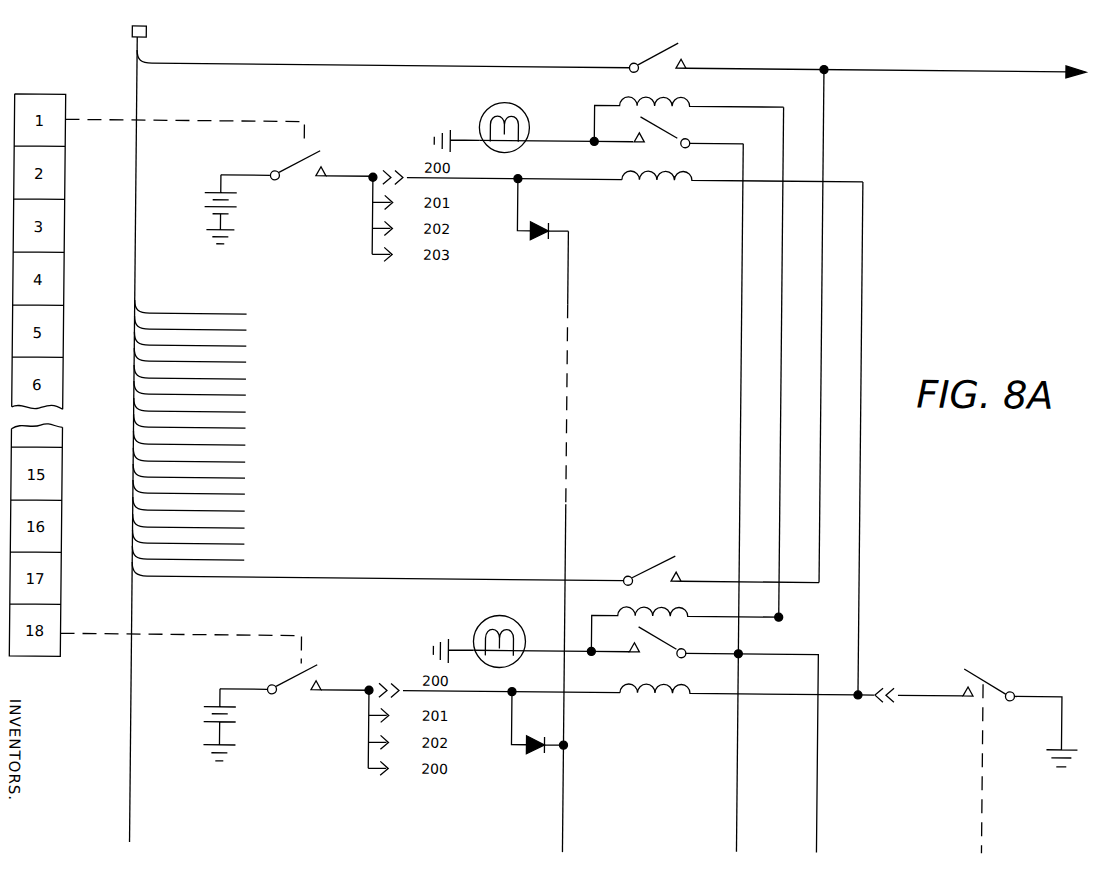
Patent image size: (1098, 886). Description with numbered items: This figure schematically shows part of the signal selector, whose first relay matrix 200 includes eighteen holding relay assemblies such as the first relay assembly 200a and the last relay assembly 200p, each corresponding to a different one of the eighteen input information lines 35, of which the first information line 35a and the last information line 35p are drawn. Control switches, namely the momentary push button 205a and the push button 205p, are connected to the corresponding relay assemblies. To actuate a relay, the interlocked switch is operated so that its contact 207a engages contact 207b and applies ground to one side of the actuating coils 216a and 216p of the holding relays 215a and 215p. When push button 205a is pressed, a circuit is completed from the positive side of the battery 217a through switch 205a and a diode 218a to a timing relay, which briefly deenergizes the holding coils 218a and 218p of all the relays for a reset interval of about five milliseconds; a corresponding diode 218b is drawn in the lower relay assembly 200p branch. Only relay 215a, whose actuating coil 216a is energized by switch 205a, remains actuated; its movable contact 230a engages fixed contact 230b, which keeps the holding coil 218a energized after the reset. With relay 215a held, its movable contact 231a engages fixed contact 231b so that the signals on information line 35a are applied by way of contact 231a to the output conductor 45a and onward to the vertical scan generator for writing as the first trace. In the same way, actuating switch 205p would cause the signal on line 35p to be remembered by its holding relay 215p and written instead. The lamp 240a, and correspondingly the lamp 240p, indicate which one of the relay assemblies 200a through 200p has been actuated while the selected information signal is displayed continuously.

The input information lines 35 is at (146, 32).
The information line 35a is at (293, 63).
The information line 35p is at (297, 576).
The output conductor 45a is at (1013, 66).
The relay matrix 200 is at (612, 542).
The relay assembly 200a is at (184, 133).
The relay assembly 200p is at (180, 653).
The control switch 205a is at (272, 167).
The control switch 205p is at (272, 681).
The battery 217a is at (232, 222).
The movable contact 231a is at (650, 55).
The fixed contact 231b is at (687, 57).
The lamp 240a is at (531, 124).
The lamp 240p is at (518, 617).
The holding coil 218a is at (691, 98).
The diode 218b is at (546, 750).
The holding coil 218p is at (700, 605).
The movable contact 230a is at (660, 127).
The fixed contact 230b is at (607, 150).
The holding relay 215a is at (736, 380).
The holding relay 215p is at (703, 739).
The actuating coil 216a is at (663, 181).
The actuating coil 216p is at (664, 693).
The contact 207a is at (1000, 659).
The contact 207b is at (972, 692).